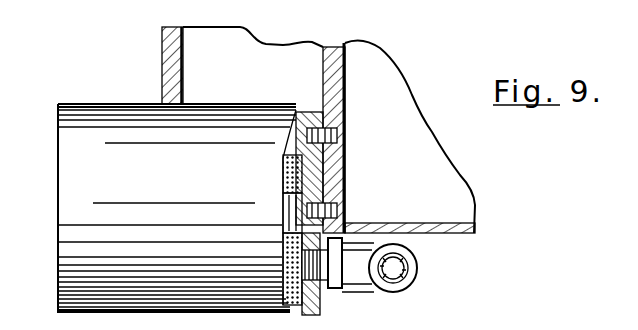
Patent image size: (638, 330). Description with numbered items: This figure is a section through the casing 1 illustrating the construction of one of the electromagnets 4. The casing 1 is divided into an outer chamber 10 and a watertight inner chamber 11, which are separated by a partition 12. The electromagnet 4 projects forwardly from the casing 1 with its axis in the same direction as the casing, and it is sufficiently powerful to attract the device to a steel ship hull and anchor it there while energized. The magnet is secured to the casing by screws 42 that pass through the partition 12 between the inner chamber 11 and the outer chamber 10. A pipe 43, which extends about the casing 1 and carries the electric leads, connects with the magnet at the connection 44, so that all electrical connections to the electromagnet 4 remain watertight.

The casing 1 is at (444, 226).
The electromagnet 4 is at (68, 193).
The outer chamber 10 is at (242, 65).
The inner chamber 11 is at (397, 148).
The partition 12 is at (345, 88).
The screw 42 is at (343, 131).
The pipe 43 is at (412, 268).
The connection of pipe to magnet 44 is at (320, 277).